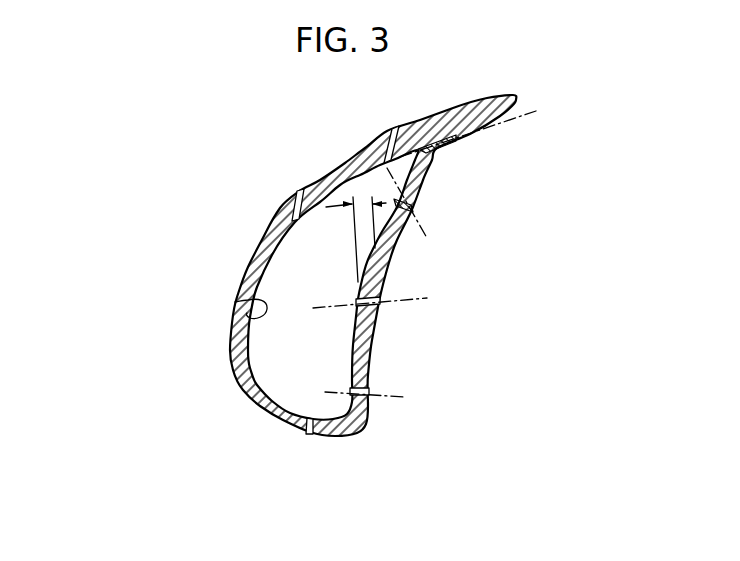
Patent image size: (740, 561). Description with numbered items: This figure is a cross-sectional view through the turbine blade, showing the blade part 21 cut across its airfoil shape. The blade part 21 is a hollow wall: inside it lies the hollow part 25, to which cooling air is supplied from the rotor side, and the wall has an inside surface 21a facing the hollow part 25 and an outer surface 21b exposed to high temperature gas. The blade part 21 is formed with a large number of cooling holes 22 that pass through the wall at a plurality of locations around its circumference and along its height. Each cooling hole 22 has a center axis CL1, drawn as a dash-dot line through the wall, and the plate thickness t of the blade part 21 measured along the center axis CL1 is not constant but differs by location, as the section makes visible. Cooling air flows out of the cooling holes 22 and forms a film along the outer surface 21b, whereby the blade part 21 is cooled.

The blade part 21 is at (250, 230).
The inside surface 21a is at (235, 302).
The outer surface 21b is at (233, 361).
The cooling hole 22 is at (414, 205).
The hollow part 25 is at (296, 366).
The center axis CL1 is at (449, 255).
The plate thickness t is at (354, 239).